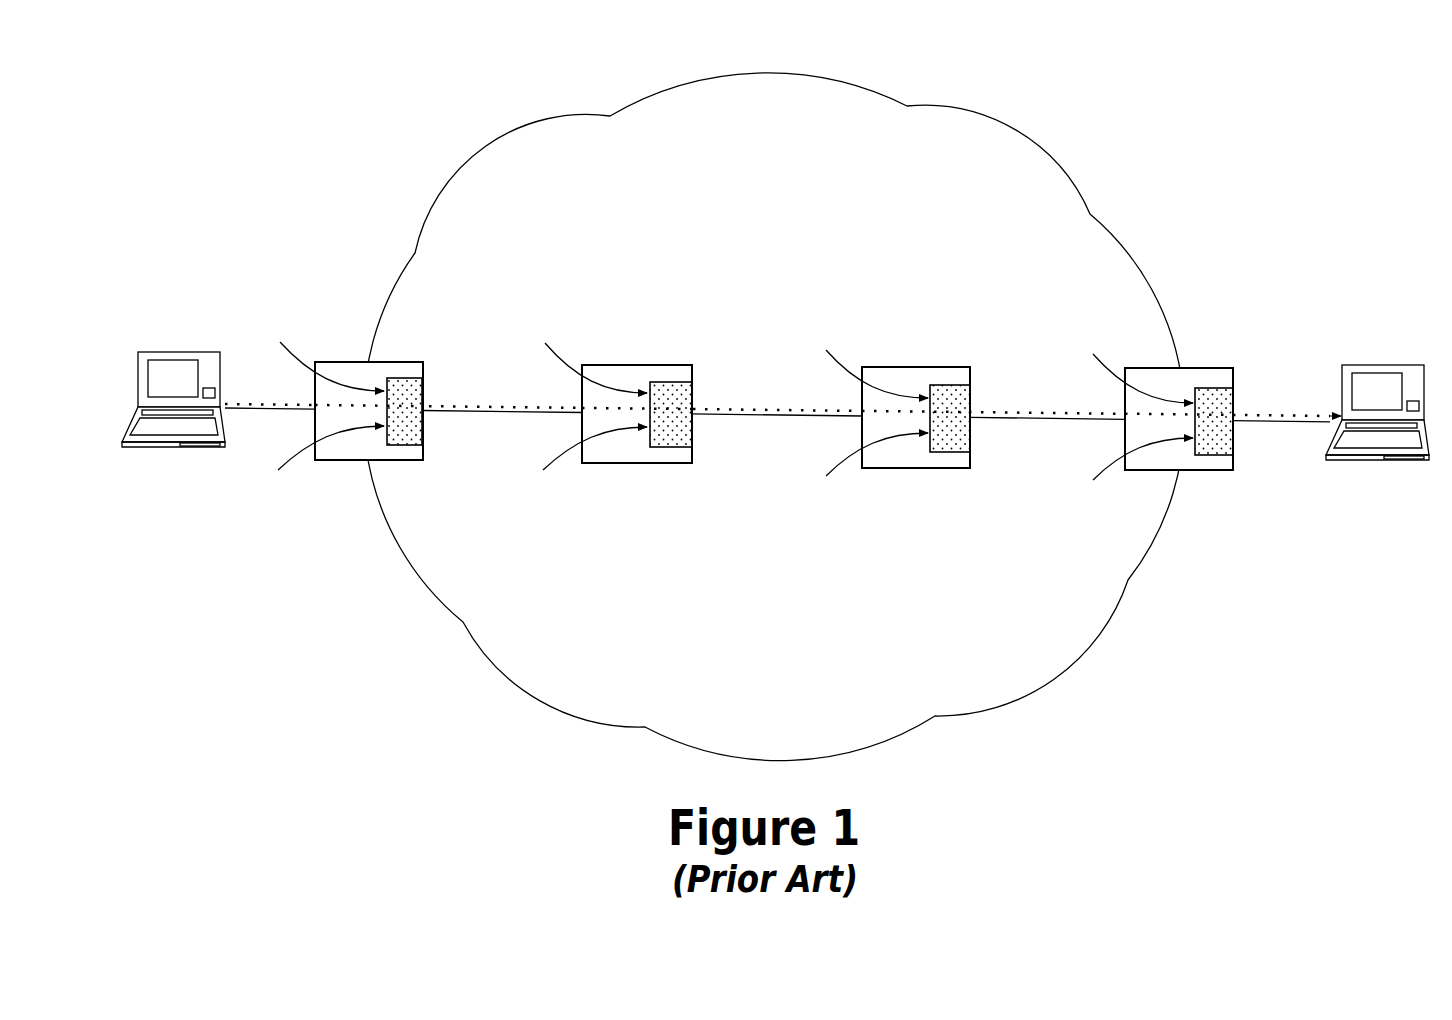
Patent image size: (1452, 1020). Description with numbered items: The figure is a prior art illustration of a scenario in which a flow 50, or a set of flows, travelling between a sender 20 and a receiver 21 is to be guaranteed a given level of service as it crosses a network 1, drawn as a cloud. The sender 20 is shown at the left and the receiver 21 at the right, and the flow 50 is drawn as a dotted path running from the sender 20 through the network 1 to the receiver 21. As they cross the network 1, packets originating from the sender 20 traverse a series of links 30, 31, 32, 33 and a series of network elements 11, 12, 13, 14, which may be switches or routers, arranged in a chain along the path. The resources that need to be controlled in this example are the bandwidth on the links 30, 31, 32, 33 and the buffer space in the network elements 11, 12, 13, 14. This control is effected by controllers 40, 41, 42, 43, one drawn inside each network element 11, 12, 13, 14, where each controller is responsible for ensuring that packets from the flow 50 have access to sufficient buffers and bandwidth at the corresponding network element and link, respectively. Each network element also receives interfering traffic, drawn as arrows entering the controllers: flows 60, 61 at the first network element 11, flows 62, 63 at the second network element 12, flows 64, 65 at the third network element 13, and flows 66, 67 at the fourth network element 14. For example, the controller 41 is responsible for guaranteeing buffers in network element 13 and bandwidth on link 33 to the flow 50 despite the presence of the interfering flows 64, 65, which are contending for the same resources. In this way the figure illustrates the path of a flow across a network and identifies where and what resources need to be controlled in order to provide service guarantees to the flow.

The network 1 is at (1120, 617).
The network element 11 is at (372, 417).
The network element 12 is at (638, 415).
The network element 13 is at (1068, 420).
The network element 14 is at (1183, 424).
The sender 20 is at (163, 448).
The receiver 21 is at (1402, 463).
The link 30 is at (282, 413).
The link 31 is at (513, 413).
The link 32 is at (795, 415).
The link 33 is at (1060, 422).
The controller 40 is at (422, 382).
The controller 41 is at (692, 385).
The controller 42 is at (970, 391).
The controller 43 is at (1233, 393).
The flow 50 is at (252, 401).
The interfering flow 60 is at (322, 352).
The interfering flow 61 is at (325, 462).
The interfering flow 62 is at (587, 353).
The interfering flow 63 is at (652, 497).
The interfering flow 64 is at (867, 360).
The interfering flow 65 is at (867, 470).
The interfering flow 66 is at (1133, 364).
The interfering flow 67 is at (1152, 472).